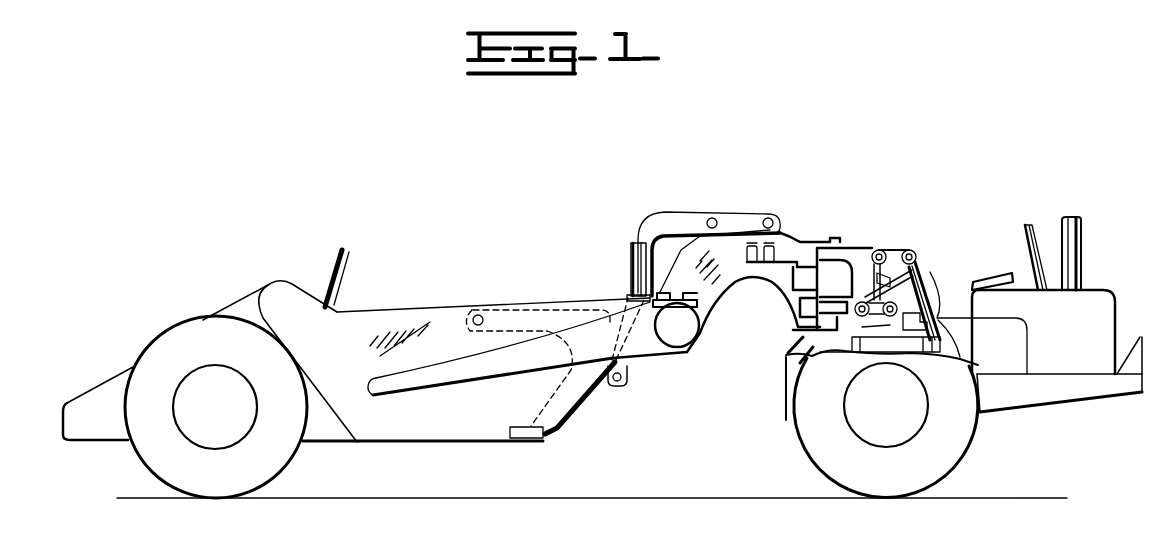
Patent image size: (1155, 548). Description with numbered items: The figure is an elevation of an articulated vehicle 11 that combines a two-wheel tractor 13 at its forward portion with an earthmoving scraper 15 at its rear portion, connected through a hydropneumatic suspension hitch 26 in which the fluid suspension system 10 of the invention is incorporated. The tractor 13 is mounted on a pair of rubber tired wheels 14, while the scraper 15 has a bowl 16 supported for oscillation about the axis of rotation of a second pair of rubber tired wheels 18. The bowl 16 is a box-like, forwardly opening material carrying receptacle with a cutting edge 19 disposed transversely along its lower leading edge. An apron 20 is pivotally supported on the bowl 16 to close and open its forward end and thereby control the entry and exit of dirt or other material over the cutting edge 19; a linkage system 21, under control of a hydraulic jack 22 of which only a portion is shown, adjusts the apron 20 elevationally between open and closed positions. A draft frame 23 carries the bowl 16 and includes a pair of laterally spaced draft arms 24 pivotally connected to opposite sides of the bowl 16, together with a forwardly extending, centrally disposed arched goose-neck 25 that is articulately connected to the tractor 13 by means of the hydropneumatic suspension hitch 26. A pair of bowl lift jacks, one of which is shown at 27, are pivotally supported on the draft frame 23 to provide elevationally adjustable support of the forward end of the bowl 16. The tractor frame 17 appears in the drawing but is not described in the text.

The fluid suspension system 10 is at (939, 243).
The articulated vehicle 11 is at (837, 118).
The two-wheel tractor 13 is at (1108, 290).
The rubber tired wheels 14 is at (960, 436).
The earthmoving scraper 15 is at (358, 299).
The bowl 16 is at (454, 312).
The tractor frame 17 is at (832, 240).
The rubber tired wheels 18 is at (270, 466).
The cutting edge 19 is at (528, 440).
The apron 20 is at (580, 398).
The linkage system 21 is at (652, 226).
The hydraulic jack 22 is at (702, 232).
The draft frame 23 is at (713, 322).
The draft arms 24 is at (538, 366).
The arched goose-neck 25 is at (788, 284).
The hydropneumatic suspension hitch 26 is at (872, 248).
The bowl lift jack 27 is at (632, 256).